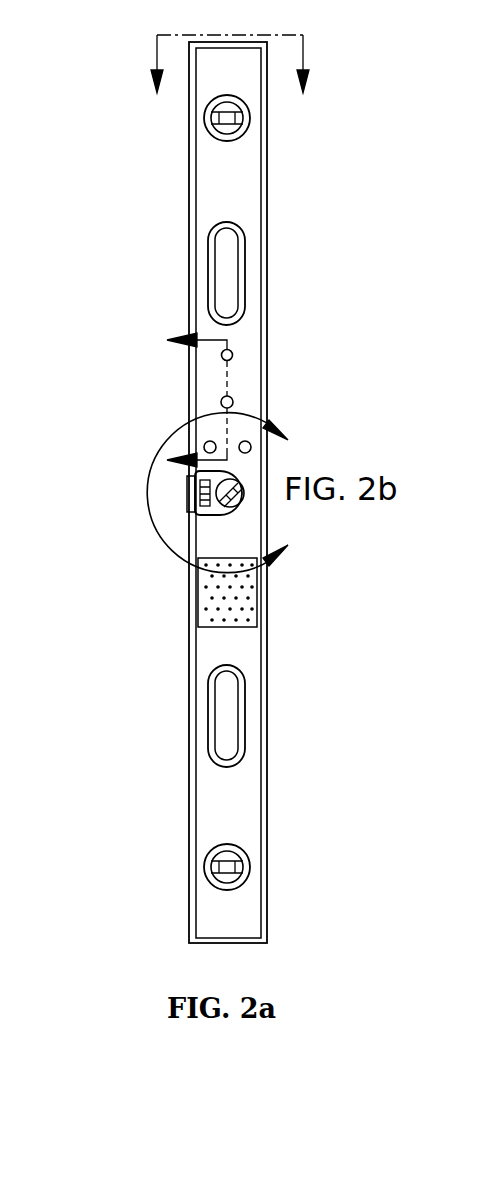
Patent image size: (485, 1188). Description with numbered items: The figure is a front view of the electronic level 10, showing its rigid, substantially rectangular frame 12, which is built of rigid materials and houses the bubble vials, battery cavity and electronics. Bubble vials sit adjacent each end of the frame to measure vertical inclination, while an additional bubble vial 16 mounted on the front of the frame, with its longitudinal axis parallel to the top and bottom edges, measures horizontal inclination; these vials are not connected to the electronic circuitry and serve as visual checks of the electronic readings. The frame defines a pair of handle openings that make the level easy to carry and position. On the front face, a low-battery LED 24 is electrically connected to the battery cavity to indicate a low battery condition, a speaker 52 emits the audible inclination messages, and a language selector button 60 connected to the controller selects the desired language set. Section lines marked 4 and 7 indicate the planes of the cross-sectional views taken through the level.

The section line 4- 4 is at (229, 87).
The section line 7- 7 is at (181, 402).
The electronic level 10 is at (137, 187).
The frame 12 is at (153, 826).
The bubble vial 16 is at (200, 502).
The low-battery LED 24 is at (233, 355).
The speaker 52 is at (250, 602).
The language selector button 60 is at (233, 402).